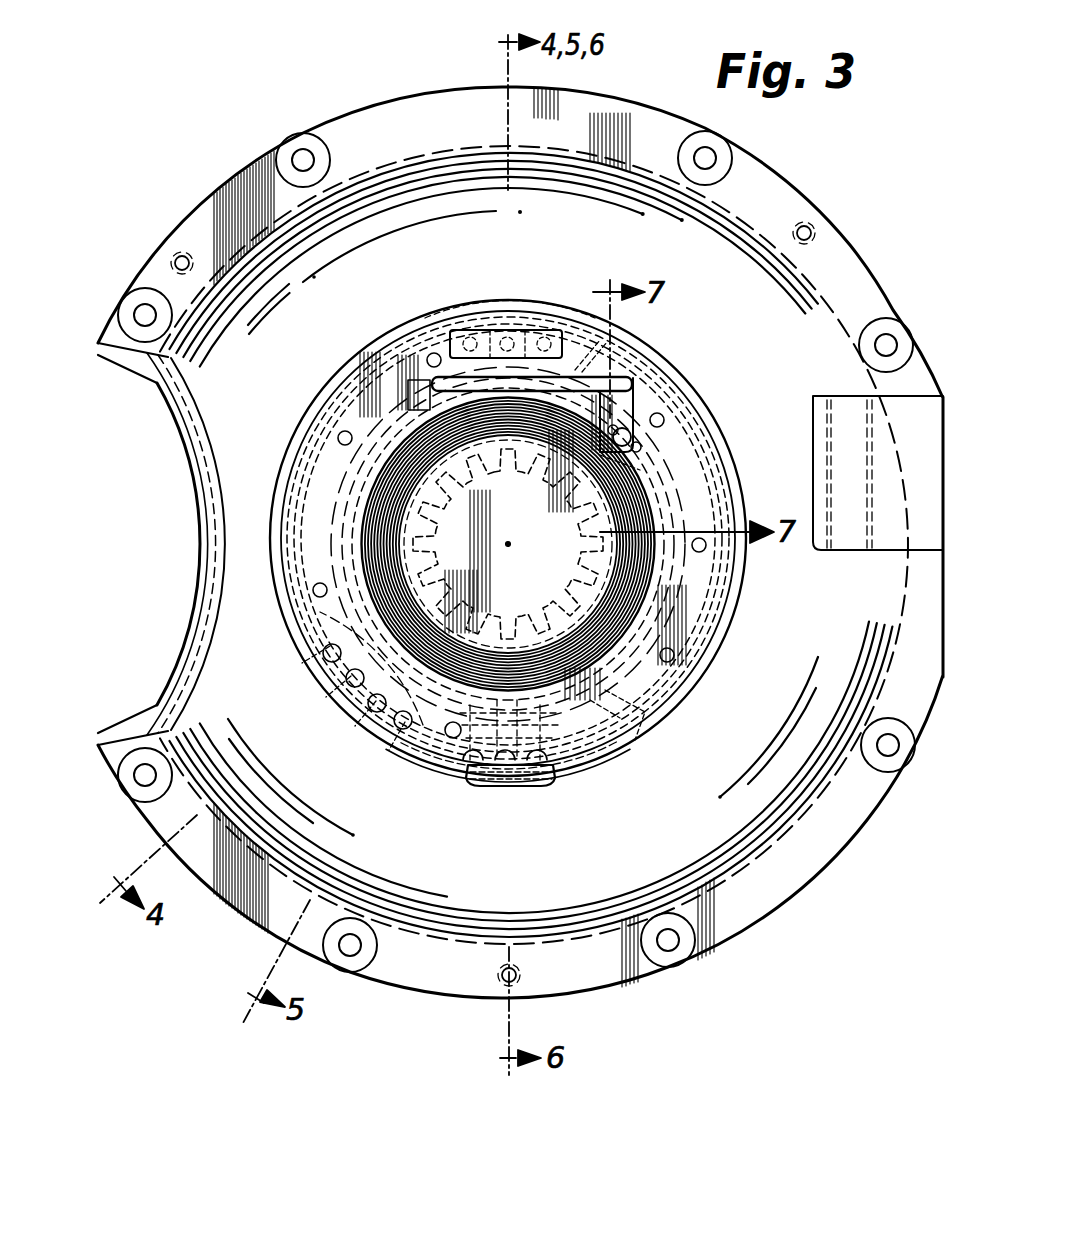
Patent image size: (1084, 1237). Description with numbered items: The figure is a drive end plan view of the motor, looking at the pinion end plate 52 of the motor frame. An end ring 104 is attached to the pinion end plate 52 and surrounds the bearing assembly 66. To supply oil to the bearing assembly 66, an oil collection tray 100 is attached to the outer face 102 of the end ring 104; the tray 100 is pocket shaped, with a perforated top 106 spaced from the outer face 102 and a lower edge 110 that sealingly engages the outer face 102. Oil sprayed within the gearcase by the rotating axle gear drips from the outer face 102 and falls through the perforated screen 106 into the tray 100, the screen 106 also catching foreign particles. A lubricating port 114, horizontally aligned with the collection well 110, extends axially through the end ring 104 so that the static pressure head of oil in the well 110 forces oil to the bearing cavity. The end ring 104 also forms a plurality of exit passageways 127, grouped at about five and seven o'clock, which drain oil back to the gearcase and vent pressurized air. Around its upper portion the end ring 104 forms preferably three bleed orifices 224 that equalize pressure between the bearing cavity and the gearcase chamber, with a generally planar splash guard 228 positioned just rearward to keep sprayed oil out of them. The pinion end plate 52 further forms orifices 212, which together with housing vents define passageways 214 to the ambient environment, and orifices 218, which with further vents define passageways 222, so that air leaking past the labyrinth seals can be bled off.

The pinion end plate 52 is at (657, 257).
The bearing assembly 66 is at (670, 433).
The oil collection tray 100 is at (432, 390).
The outer face 102 is at (307, 493).
The end ring 104 is at (266, 539).
The perforated top 106 is at (613, 343).
The lower edge 110 is at (638, 450).
The lubricating port 114 is at (627, 410).
The exit passageways 127 is at (648, 736).
The orifices 212 is at (316, 695).
The passageways 214 is at (300, 641).
The orifice 218 is at (566, 781).
The passageways 222 is at (523, 788).
The bleed orifices 224 is at (506, 316).
The splash guard 228 is at (442, 325).